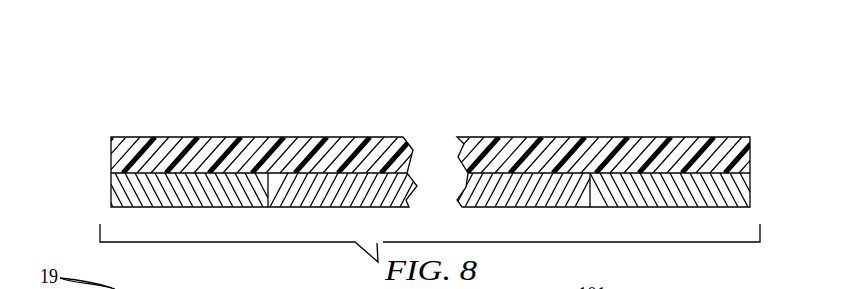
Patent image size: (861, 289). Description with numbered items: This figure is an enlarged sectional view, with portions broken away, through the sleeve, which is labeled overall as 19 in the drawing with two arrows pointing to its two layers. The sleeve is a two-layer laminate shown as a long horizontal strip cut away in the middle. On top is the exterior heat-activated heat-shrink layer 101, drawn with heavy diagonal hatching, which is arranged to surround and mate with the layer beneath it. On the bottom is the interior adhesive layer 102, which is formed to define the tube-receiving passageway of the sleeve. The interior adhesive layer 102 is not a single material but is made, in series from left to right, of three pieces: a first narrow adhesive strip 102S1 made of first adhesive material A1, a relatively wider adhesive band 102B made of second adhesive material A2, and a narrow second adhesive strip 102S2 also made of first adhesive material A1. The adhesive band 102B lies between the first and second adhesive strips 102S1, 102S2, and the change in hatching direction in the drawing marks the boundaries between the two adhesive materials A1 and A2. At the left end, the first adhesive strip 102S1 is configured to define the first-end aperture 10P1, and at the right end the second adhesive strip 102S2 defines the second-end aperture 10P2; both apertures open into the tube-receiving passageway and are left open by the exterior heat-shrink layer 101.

The laminated sheet / stack 19 is at (52, 98).
The exterior heat-activated heat-shrink layer 101 is at (88, 146).
The interior adhesive layer 102 is at (82, 185).
The first-end aperture 10P1 is at (125, 207).
The second-end aperture 10P2 is at (750, 207).
The first adhesive material A1 is at (180, 196).
The second adhesive material A2 is at (367, 197).
The adhesive band 102B is at (493, 198).
The first narrow adhesive strip 102S1 is at (222, 192).
The second adhesive strip 102S2 is at (692, 195).